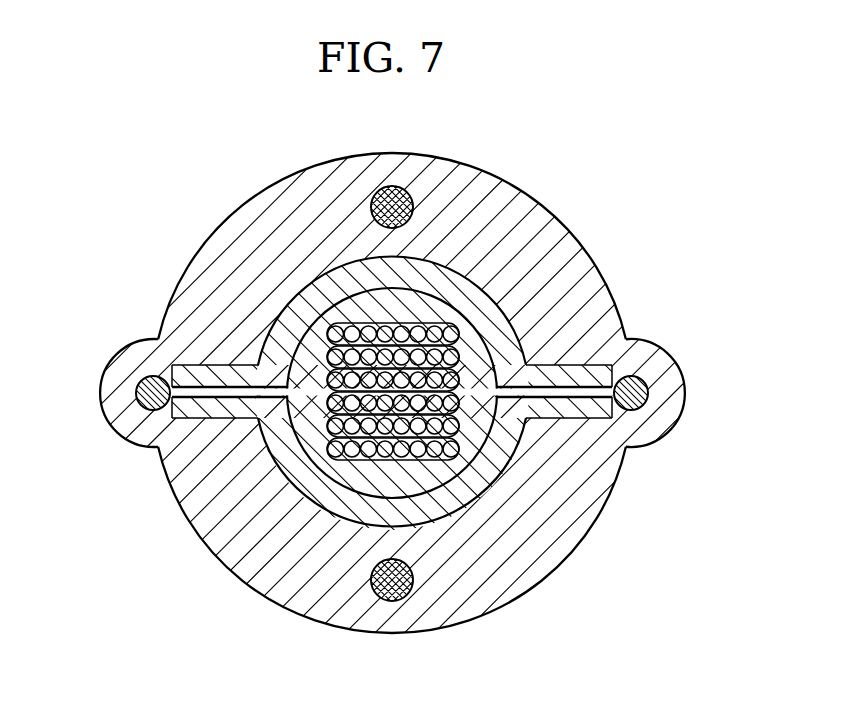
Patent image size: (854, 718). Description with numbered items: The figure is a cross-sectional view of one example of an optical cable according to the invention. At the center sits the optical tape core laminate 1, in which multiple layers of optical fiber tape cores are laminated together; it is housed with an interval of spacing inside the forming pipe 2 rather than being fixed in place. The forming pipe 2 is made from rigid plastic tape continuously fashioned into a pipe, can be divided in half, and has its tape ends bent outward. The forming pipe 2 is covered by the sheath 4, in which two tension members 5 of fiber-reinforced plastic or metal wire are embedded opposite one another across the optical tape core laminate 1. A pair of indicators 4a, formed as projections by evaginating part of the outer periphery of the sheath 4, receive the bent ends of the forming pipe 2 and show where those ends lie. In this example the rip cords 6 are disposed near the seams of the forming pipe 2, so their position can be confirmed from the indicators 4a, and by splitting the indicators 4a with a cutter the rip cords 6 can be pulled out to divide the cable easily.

The optical tape core laminate 1 is at (472, 398).
The forming pipe 2 is at (437, 272).
The sheath 4 is at (535, 208).
The indicator 4a is at (130, 357).
The tension member 5 is at (397, 183).
The rip cord 6 is at (138, 402).